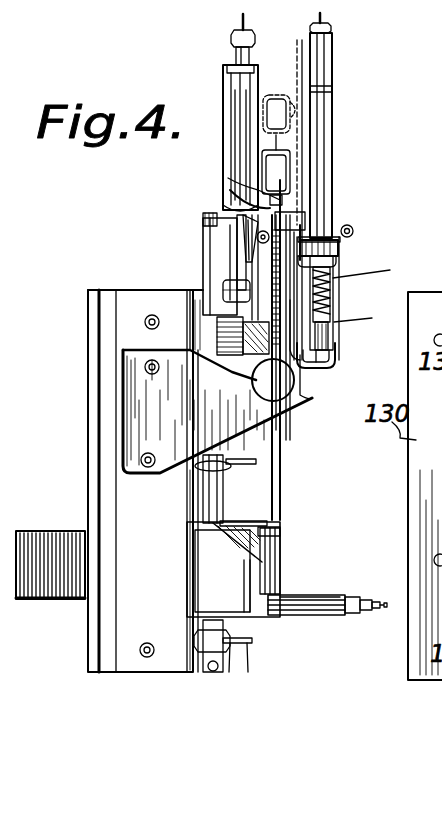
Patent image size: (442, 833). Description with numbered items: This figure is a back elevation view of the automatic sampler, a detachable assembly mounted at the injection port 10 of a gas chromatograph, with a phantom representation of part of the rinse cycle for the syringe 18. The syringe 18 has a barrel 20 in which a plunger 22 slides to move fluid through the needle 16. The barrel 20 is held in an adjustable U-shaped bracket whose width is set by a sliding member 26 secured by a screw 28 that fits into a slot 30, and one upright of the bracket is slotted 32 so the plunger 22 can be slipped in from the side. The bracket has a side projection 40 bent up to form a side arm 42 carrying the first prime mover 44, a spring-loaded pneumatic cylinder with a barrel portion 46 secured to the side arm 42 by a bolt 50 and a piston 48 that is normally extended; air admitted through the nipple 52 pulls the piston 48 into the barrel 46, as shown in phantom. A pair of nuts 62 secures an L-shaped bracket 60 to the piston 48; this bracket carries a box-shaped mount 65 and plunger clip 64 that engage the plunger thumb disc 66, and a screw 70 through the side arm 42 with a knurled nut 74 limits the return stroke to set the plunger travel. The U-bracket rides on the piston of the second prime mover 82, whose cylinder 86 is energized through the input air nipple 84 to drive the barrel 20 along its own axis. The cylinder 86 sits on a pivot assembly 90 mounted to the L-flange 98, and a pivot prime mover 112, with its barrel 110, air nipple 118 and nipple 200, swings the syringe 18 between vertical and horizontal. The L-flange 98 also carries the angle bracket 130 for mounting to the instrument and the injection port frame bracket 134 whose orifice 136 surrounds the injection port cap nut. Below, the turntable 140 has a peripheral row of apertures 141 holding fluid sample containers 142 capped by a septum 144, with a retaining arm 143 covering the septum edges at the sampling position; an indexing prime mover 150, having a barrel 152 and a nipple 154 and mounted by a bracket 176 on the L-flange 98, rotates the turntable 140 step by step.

The injection port 10 is at (306, 381).
The needle 16 is at (286, 425).
The syringe 18 is at (276, 288).
The barrel 20 is at (272, 272).
The plunger 22 is at (256, 150).
The sliding member 26 is at (318, 228).
The screw 28 is at (203, 229).
The slot 30 is at (238, 250).
The slot 32 is at (270, 205).
The side projection 40 is at (302, 330).
The side arm 42 is at (332, 225).
The prime mover 44 is at (333, 85).
The barrel portion 46 is at (326, 93).
The piston 48 is at (312, 316).
The bolt 50 is at (330, 262).
The nipple 52 is at (354, 233).
The L-shaped bracket 60 is at (379, 274).
The nuts 62 is at (328, 354).
The plunger clip 64 is at (292, 182).
The box-shaped mount 65 is at (279, 95).
The plunger thumb disc 66 is at (301, 173).
The screw 70 is at (371, 319).
The knurled nut 74 is at (332, 278).
The second prime mover 82 is at (223, 85).
The input air nipple 84 is at (241, 22).
The cylinder 86 is at (240, 109).
The pivot assembly 90 is at (164, 368).
The L-flange 98 is at (142, 290).
The barrel 110 is at (218, 470).
The pivot prime mover 112 is at (236, 467).
The air nipple 118 is at (230, 660).
The angle bracket 130 is at (96, 312).
The injection port frame bracket 134 is at (308, 394).
The orifice 136 is at (322, 420).
The turntable 140 is at (58, 602).
The apertures 141 is at (280, 542).
The fluid sample container 142 is at (280, 559).
The retaining arm 143 is at (246, 518).
The cap or septum 144 is at (272, 532).
The indexing prime mover 150 is at (345, 597).
The barrel 152 is at (320, 612).
The nipple 154 is at (383, 612).
The bracket 176 is at (262, 584).
The nipple 200 is at (247, 660).